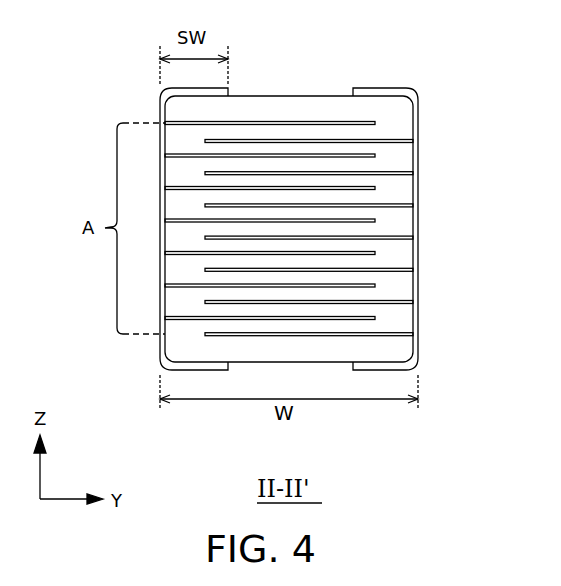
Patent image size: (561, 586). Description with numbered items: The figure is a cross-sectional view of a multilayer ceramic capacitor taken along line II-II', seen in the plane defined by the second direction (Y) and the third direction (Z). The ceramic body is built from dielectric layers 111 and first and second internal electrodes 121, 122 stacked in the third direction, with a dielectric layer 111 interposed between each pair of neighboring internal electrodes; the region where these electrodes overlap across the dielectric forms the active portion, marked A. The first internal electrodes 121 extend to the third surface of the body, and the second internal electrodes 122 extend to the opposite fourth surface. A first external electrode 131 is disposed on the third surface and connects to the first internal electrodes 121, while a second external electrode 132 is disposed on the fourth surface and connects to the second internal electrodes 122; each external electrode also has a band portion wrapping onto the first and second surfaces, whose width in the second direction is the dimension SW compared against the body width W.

The dielectric layer 111 is at (398, 350).
The first internal electrode 121 is at (402, 152).
The second internal electrode 122 is at (160, 111).
The first external electrode 131 is at (418, 114).
The second external electrode 132 is at (160, 349).